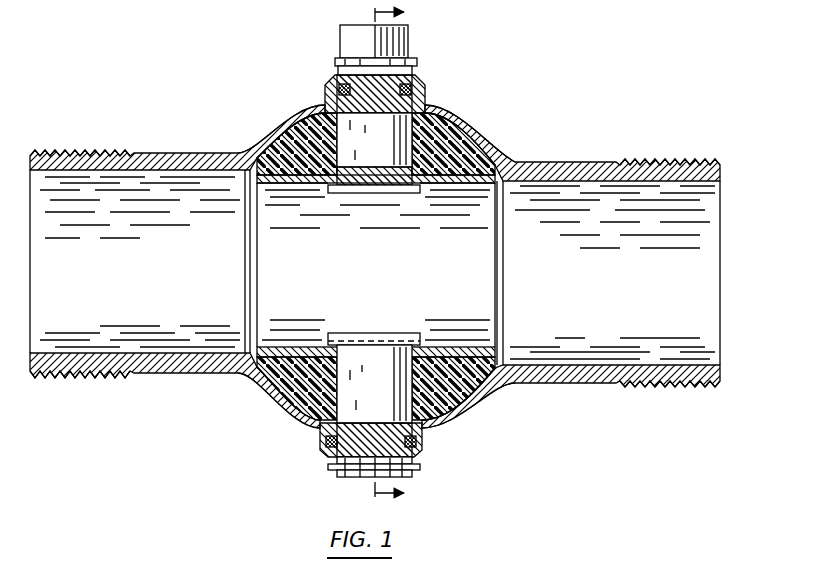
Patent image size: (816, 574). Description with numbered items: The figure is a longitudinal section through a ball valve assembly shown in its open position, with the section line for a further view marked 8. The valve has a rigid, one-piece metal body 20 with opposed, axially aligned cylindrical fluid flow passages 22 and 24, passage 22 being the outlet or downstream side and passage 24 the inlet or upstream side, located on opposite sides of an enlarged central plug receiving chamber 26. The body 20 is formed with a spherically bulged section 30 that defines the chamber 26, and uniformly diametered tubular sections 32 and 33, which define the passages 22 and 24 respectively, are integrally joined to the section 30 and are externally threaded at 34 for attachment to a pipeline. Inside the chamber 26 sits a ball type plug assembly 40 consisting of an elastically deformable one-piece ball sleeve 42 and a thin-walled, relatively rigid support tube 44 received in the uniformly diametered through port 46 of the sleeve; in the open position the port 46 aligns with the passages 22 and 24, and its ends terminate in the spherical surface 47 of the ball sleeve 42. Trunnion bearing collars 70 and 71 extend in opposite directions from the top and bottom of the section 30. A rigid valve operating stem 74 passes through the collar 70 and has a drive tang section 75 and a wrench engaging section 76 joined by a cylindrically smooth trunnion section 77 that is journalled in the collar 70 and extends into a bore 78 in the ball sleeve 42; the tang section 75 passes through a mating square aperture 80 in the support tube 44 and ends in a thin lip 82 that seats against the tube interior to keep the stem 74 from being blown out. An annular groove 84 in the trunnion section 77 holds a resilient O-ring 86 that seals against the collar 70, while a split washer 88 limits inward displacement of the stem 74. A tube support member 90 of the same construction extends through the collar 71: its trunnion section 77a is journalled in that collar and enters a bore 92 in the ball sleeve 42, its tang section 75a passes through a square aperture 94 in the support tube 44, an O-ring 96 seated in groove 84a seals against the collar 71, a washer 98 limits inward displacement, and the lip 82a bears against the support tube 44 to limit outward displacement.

The body 20 is at (566, 390).
The fluid flow passage 22 is at (600, 182).
The fluid flow passage 24 is at (131, 172).
The plug receiving chamber 26 is at (472, 390).
The spherically bulged section 30 is at (262, 404).
The tubular section 32 is at (582, 387).
The tubular section 33 is at (132, 376).
The external threads 34 is at (80, 154).
The ball type plug assembly 40 is at (499, 214).
The ball sleeve 42 is at (418, 362).
The support tube 44 is at (459, 180).
The through port 46 is at (429, 184).
The spherical surface 47 is at (455, 404).
The trunnion bearing collar 70 is at (429, 91).
The trunnion bearing collar 71 is at (421, 453).
The valve operating stem 74 is at (352, 32).
The drive tang section 75 is at (394, 192).
The tang section 75a is at (353, 352).
The wrench engaging section 76 is at (400, 50).
The trunnion section 77 is at (422, 118).
The trunnion section 77a is at (305, 424).
The bore 78 is at (338, 122).
The square aperture 80 is at (340, 194).
The lip 82 is at (377, 194).
The lip 82a is at (377, 334).
The annular groove 84 is at (413, 88).
The groove 84a is at (326, 446).
The O-ring 86 is at (340, 89).
The split washer 88 is at (337, 63).
The tube support member 90 is at (406, 479).
The bore 92 is at (415, 346).
The square aperture 94 is at (341, 336).
The O-ring 96 is at (412, 444).
The washer 98 is at (331, 473).
The section line 8- 8 is at (377, 256).